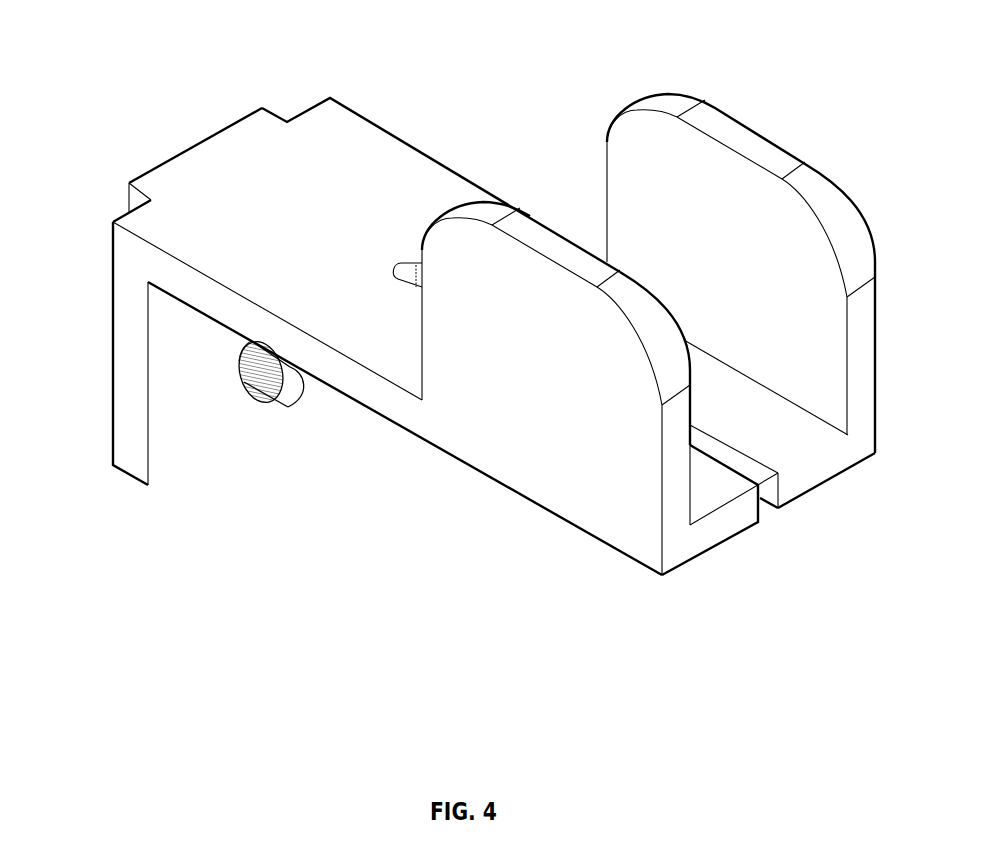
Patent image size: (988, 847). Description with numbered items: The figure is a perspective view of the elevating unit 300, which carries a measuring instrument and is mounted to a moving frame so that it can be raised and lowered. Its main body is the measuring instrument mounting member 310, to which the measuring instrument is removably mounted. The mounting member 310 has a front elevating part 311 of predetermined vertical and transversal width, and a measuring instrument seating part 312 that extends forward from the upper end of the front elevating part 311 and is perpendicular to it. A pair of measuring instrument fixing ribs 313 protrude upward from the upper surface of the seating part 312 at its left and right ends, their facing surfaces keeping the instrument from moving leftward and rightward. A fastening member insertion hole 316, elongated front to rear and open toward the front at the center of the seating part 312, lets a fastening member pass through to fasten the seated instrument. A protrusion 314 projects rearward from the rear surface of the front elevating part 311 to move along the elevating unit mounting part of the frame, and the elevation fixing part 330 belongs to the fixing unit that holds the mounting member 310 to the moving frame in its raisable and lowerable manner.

The elevating unit 300 is at (174, 87).
The measuring instrument mounting member 310 is at (388, 121).
The front elevating part 311 is at (158, 387).
The measuring instrument seating part 312 is at (393, 360).
The measuring instrument fixing ribs 313 is at (517, 223).
The protrusion 314 is at (196, 146).
The fastening member insertion hole 316 is at (764, 475).
The elevation fixing part 330 is at (251, 413).